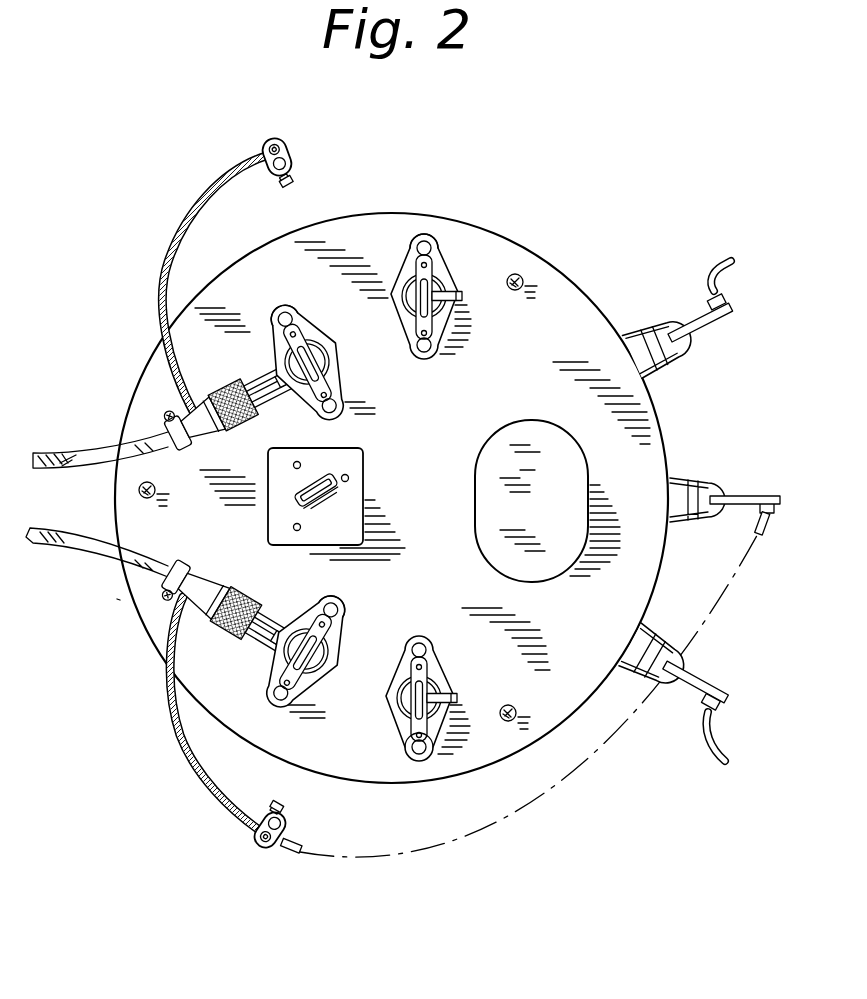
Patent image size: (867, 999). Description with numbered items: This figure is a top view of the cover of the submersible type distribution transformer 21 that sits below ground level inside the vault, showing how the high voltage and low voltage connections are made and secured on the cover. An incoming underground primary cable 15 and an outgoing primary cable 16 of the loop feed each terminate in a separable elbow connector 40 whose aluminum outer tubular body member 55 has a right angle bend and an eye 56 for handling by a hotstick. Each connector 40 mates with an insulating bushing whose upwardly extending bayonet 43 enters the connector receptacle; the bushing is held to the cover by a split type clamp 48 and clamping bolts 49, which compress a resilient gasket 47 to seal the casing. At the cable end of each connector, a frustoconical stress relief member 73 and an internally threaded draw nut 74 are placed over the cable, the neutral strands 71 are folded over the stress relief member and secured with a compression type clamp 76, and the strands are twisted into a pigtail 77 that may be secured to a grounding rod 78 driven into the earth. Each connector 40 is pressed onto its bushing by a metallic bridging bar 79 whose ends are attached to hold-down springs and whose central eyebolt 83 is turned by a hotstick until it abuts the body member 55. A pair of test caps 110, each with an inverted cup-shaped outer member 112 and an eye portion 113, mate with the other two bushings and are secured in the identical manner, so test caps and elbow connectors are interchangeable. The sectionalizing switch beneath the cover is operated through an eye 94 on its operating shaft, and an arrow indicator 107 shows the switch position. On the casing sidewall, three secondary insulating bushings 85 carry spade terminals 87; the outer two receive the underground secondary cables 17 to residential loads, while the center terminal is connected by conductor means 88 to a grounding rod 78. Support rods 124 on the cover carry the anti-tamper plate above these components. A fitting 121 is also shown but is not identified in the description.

The incoming underground primary cable 15 is at (96, 556).
The outgoing primary cable 16 is at (98, 452).
The underground secondary cable 17 is at (730, 261).
The submersible type distribution transformer 21 is at (113, 609).
The separable elbow connector 40 is at (296, 409).
The bayonet 43 is at (274, 140).
The resilient gasket 47 is at (456, 450).
The split type clamp 48 is at (424, 240).
The clamping bolts 49 is at (433, 247).
The outer tubular body member 55 is at (246, 380).
The eye 56 is at (300, 396).
The neutral strands 71 is at (72, 468).
The stress relief member 73 is at (206, 442).
The draw nut 74 is at (244, 428).
The compression type clamp 76 is at (186, 448).
The pigtail 77 is at (164, 268).
The grounding rod 78 is at (274, 178).
The bridging bar 79 is at (416, 262).
The eyebolt 83 is at (437, 282).
The secondary insulating bushings 85 is at (642, 326).
The spade terminals 87 is at (712, 312).
The conductor means 88 is at (294, 856).
The eye 94 is at (310, 483).
The arrow indicator 107 is at (338, 488).
The test cap 110 is at (391, 326).
The outer member 112 is at (404, 290).
The eye portion 113 is at (462, 298).
The cable fitting 121 is at (290, 152).
The support rods 124 is at (138, 491).